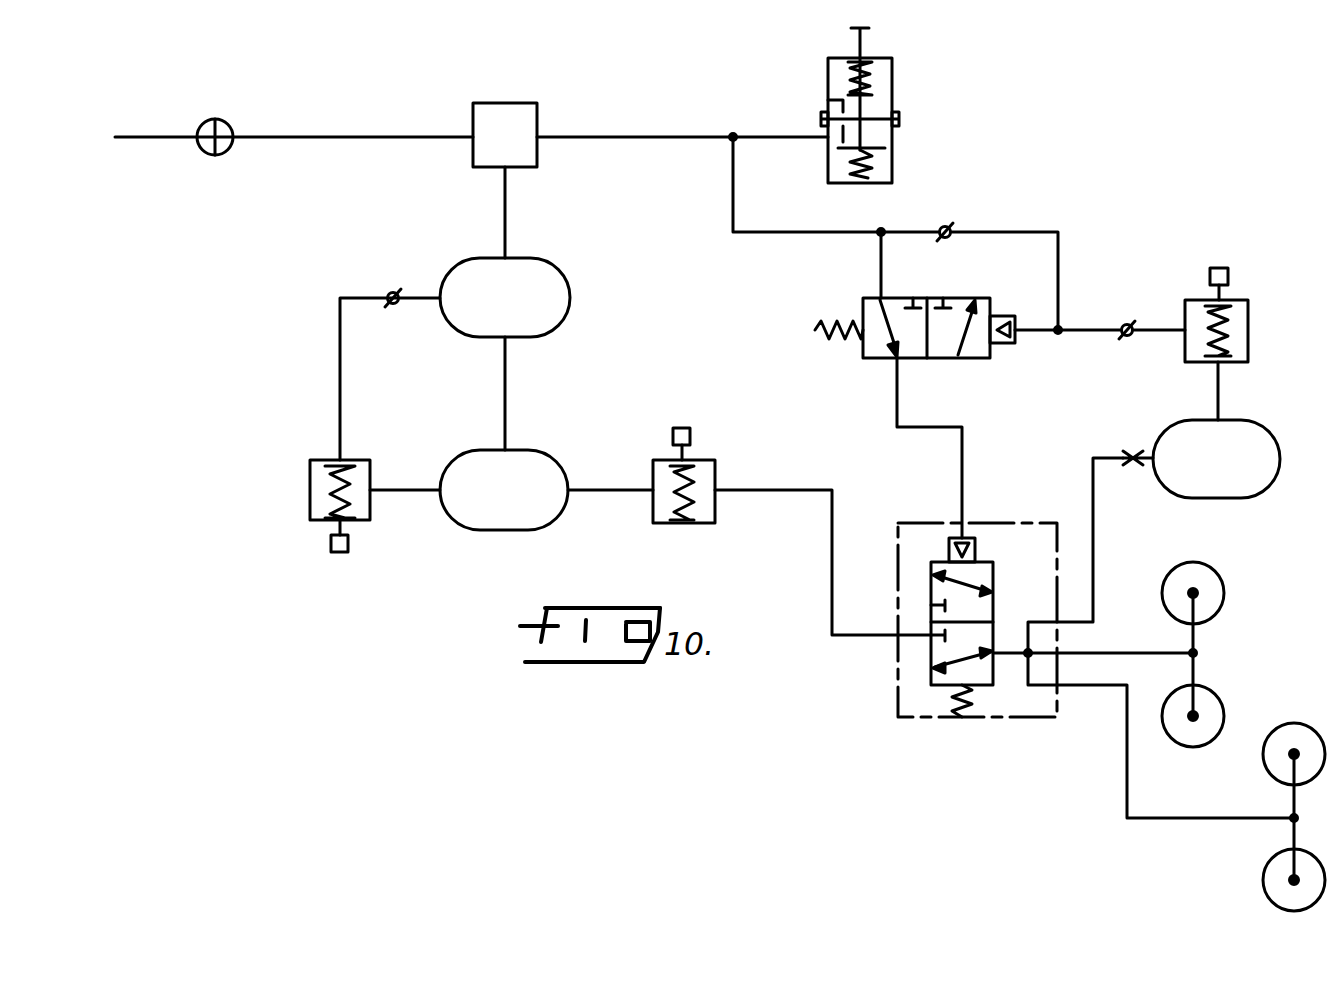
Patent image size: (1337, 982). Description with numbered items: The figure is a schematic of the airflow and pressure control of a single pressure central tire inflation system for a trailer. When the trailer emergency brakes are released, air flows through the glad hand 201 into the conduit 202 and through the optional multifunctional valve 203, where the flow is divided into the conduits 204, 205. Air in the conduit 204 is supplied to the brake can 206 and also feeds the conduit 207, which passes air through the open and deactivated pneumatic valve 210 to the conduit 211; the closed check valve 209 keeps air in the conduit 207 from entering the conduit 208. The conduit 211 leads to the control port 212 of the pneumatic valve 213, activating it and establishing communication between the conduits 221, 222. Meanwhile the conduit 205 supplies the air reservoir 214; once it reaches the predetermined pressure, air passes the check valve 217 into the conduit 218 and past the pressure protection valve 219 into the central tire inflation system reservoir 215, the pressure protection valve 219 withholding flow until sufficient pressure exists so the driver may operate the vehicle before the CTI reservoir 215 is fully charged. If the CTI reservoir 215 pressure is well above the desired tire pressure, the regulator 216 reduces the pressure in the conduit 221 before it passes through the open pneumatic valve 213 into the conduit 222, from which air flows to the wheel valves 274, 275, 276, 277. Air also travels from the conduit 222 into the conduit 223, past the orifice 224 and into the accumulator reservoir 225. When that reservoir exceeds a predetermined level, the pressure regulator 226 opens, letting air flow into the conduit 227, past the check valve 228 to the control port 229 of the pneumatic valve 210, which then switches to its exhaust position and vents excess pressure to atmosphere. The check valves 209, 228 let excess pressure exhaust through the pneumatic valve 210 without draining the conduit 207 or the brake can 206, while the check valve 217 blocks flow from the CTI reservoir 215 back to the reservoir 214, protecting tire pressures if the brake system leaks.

The glad hand 201 is at (225, 124).
The conduit 202 is at (408, 118).
The multifunctional valve 203 is at (520, 103).
The conduit 204 is at (628, 137).
The conduit 205 is at (507, 222).
The brake can 206 is at (894, 92).
The conduit 207 is at (800, 236).
The conduit 208 is at (1046, 232).
The check valve 209 is at (951, 227).
The pneumatic valve 210 is at (887, 356).
The conduit 211 is at (965, 442).
The control port 212 is at (978, 550).
The pneumatic valve 213 is at (935, 663).
The air reservoir 214 is at (573, 292).
The central tire inflation system reservoir 215 is at (553, 465).
The regulator 216 is at (668, 524).
The check valve 217 is at (420, 266).
The conduit 218 is at (340, 398).
The pressure protection valve 219 is at (310, 496).
The conduit 221 is at (832, 575).
The conduit 222 is at (1008, 650).
The conduit 223 is at (1095, 552).
The orifice 224 is at (1137, 428).
The accumulator reservoir 225 is at (1252, 420).
The pressure regulator 226 is at (1250, 332).
The conduit 227 is at (1170, 340).
The check valve 228 is at (1158, 296).
The control port 229 is at (1016, 345).
The wheel valve 274 is at (1226, 594).
The wheel valve 275 is at (1226, 712).
The wheel valve 276 is at (1268, 772).
The wheel valve 277 is at (1265, 896).